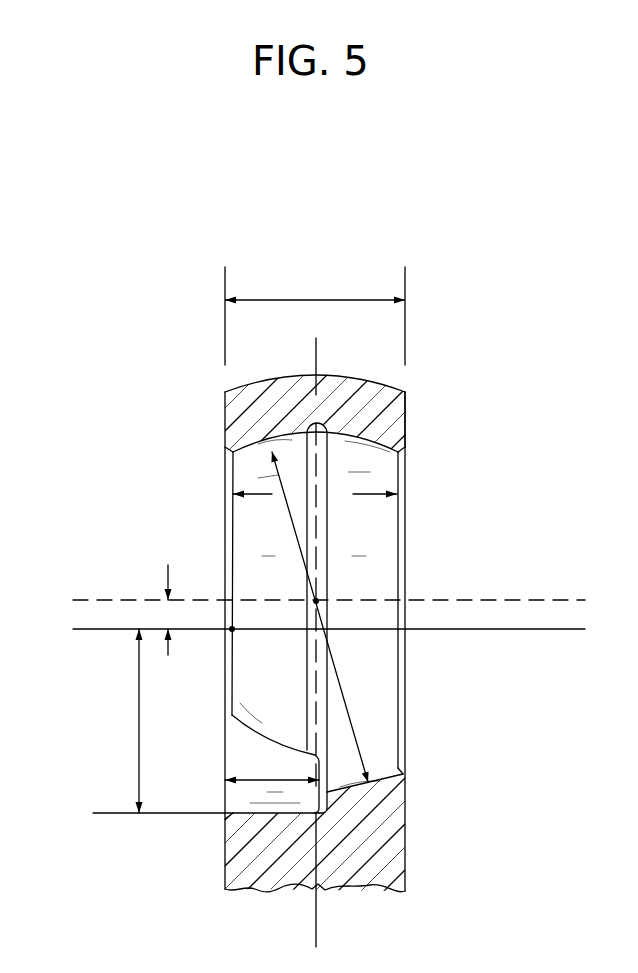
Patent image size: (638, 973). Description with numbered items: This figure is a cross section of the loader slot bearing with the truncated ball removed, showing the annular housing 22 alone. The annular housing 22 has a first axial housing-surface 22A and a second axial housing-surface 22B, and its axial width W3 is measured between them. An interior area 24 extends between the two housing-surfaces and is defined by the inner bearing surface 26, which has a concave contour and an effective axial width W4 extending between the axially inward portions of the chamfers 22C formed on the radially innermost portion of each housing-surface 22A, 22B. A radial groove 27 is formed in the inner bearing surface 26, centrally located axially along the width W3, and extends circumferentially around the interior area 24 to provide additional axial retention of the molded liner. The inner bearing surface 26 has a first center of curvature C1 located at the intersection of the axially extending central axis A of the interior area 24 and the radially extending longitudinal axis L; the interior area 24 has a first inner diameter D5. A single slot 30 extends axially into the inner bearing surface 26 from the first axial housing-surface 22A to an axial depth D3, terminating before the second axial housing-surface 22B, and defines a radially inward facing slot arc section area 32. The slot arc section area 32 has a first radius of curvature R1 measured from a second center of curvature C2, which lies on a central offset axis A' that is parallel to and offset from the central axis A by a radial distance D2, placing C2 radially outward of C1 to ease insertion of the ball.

The annular housing 22 is at (380, 849).
The first axial housing-surface 22A is at (223, 412).
The second axial housing-surface 22B is at (407, 408).
The chamfer 22C is at (228, 447).
The interior area 24 is at (243, 543).
The inner bearing surface 26 is at (250, 454).
The radial groove 27 is at (320, 527).
The slot 30 is at (215, 793).
The slot arc section area 32 is at (245, 745).
The central axis A is at (302, 578).
The central offset axis A' is at (310, 654).
The first center of curvature C1 is at (317, 601).
The second center of curvature C2 is at (230, 631).
The radial distance D2 is at (168, 568).
The axial depth D3 is at (288, 778).
The first inner diameter D5 is at (353, 730).
The longitudinal axis L is at (324, 901).
The first radius of curvature R1 is at (139, 713).
The axial width W3 is at (352, 298).
The effective axial width W4 is at (365, 493).